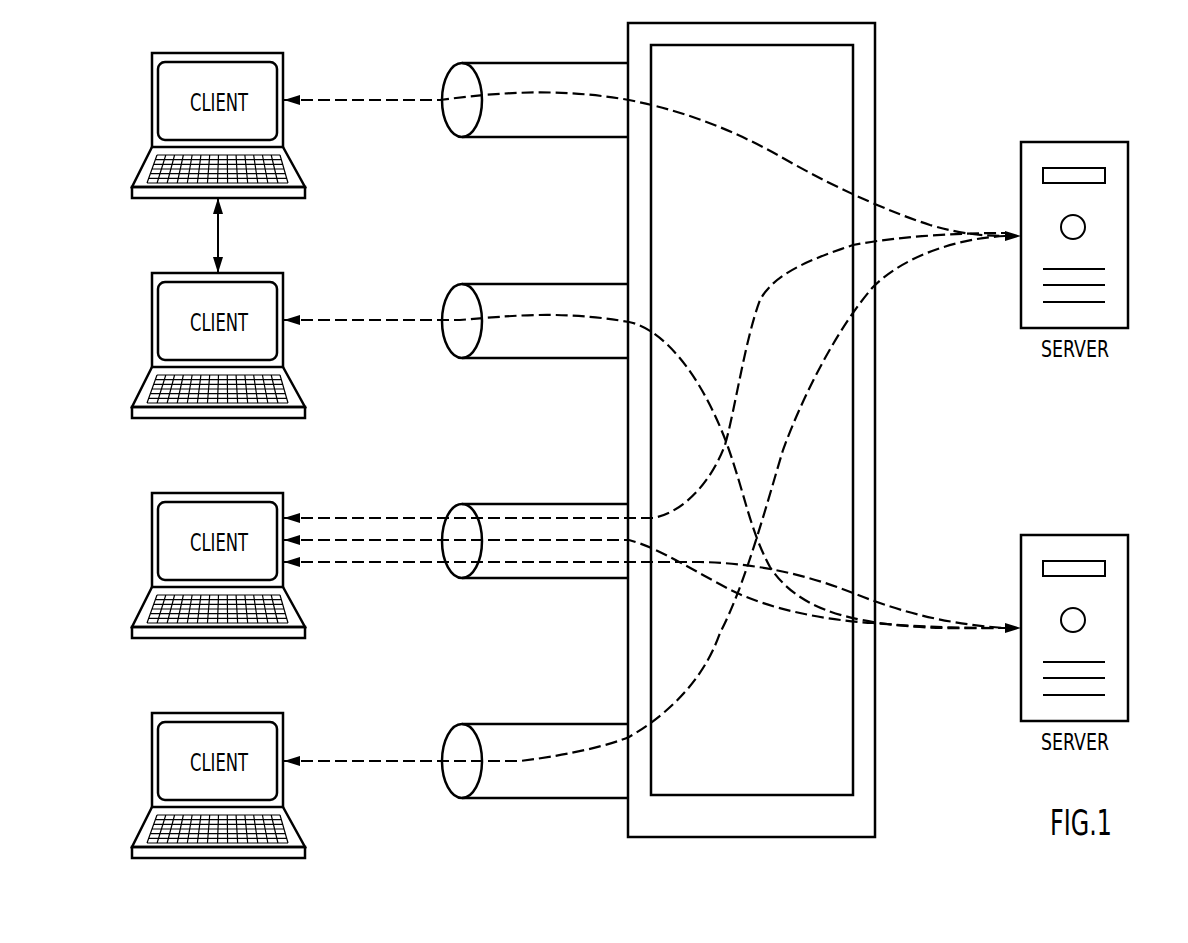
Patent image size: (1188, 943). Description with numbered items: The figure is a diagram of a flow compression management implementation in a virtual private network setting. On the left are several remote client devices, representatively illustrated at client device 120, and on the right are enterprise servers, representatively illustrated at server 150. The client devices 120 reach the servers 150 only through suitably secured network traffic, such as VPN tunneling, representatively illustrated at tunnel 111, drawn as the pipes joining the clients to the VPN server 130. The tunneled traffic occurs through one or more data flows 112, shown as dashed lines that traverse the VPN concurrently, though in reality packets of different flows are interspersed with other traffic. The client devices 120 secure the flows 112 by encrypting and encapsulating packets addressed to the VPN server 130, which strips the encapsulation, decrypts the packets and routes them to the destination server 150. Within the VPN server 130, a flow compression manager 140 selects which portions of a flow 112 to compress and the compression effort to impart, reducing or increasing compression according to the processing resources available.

The tunnel 111 is at (545, 138).
The data flow 112 is at (743, 135).
The client device 120 is at (253, 492).
The VPN server 130 is at (875, 733).
The flow compression manager 140 is at (651, 661).
The server 150 is at (1128, 262).